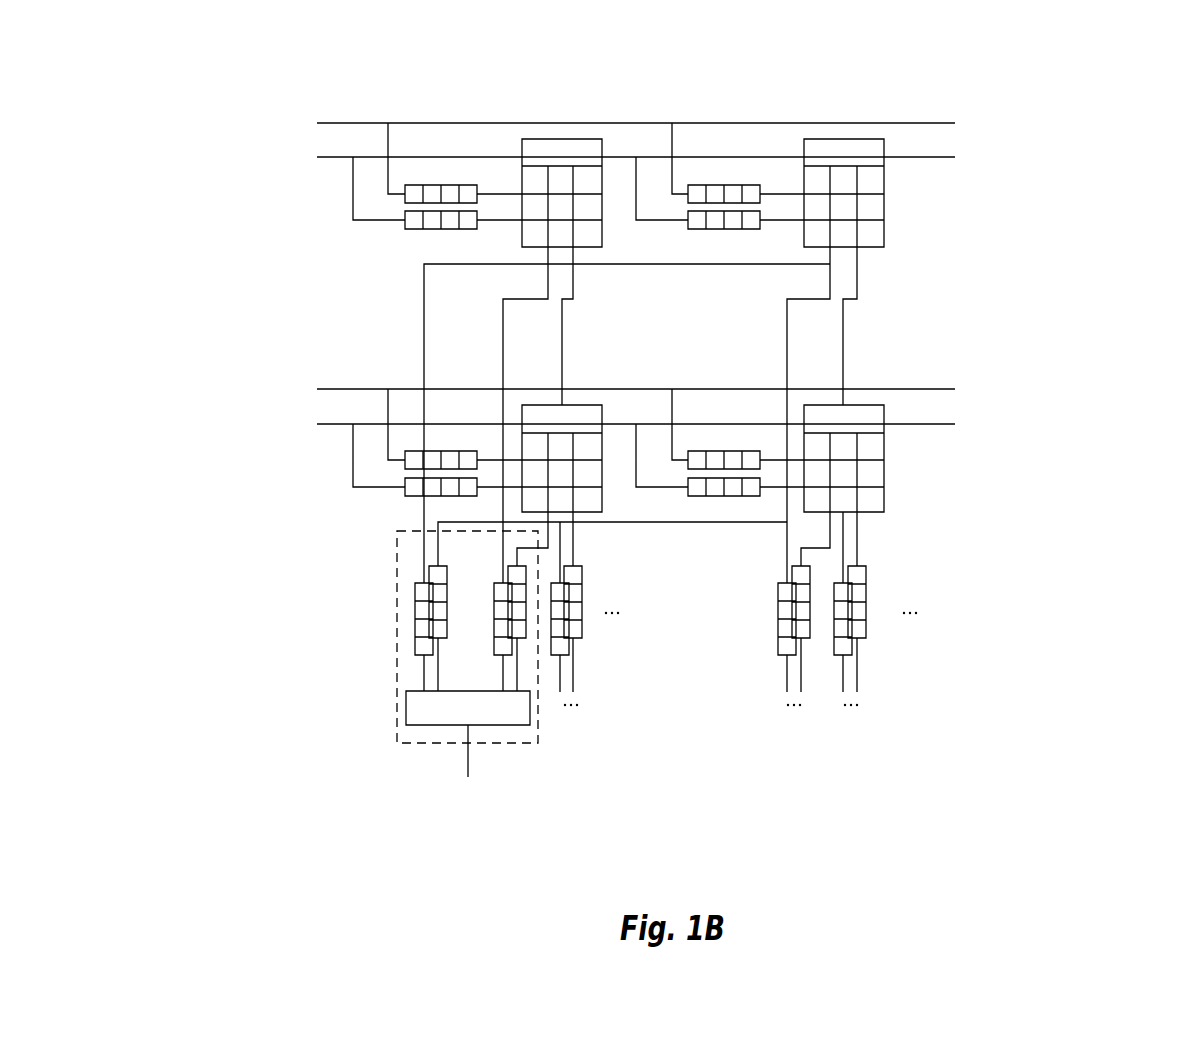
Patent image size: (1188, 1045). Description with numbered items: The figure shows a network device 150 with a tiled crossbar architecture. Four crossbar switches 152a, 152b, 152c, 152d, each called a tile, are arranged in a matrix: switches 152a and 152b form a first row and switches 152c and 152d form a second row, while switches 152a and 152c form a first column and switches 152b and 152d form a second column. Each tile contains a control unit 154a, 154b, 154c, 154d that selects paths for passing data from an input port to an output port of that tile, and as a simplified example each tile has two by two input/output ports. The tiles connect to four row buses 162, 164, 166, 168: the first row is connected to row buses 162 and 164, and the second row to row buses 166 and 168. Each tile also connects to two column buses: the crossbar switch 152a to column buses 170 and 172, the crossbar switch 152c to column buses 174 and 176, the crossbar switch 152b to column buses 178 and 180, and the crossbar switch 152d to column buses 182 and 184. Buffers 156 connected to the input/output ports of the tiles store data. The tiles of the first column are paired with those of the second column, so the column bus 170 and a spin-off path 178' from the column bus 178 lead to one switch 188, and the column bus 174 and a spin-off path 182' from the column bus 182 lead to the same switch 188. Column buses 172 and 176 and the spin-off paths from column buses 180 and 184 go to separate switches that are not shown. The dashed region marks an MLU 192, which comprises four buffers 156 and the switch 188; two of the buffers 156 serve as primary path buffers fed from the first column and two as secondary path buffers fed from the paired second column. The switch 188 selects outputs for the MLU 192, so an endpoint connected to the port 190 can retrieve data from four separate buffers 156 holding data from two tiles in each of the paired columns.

The network device 150 is at (1042, 104).
The crossbar switch 152a is at (568, 138).
The crossbar switch 152b is at (848, 138).
The crossbar switch 152c is at (578, 409).
The crossbar switch 152d is at (869, 409).
The control unit 154a is at (562, 193).
The control unit 154b is at (844, 193).
The control unit 154c is at (562, 458).
The control unit 154d is at (844, 458).
The buffers 156 is at (413, 232).
The row bus 162 is at (317, 122).
The row bus 164 is at (318, 160).
The row bus 166 is at (317, 388).
The row bus 168 is at (318, 426).
The column bus 170 is at (500, 313).
The column bus 172 is at (560, 330).
The column bus 174 is at (547, 545).
The column bus 176 is at (575, 537).
The column bus 178 is at (765, 415).
The spin-off path 178' is at (576, 434).
The column bus 180 is at (843, 328).
The column bus 182 is at (883, 541).
The spin-off path 182' is at (555, 549).
The column bus 184 is at (860, 526).
The switch 188 is at (468, 708).
The port 190 is at (466, 768).
The MLU 192 is at (396, 712).